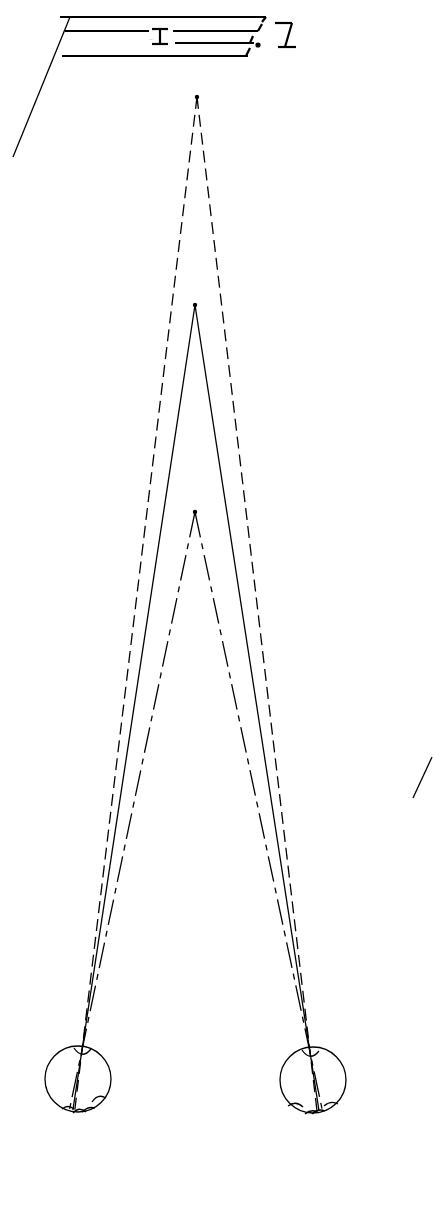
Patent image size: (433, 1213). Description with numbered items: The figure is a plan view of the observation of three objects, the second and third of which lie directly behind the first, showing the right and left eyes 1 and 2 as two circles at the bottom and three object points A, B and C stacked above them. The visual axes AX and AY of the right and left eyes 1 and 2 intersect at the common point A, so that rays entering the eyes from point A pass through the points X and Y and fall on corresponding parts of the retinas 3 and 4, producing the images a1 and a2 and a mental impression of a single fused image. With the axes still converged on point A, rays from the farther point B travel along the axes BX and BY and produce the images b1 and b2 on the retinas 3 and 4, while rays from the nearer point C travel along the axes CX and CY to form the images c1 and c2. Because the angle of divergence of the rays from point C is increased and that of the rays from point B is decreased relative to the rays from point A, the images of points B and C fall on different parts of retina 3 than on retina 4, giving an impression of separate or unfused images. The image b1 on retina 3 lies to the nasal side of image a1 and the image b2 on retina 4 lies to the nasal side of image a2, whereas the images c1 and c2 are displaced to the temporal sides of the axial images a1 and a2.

The right eye 1 is at (337, 1070).
The left eye 2 is at (100, 1067).
The retina 3 is at (290, 1105).
The retina 4 is at (104, 1098).
The point A is at (204, 306).
The point B is at (206, 98).
The point C is at (204, 513).
The nodal point of right eye X is at (313, 1043).
The nodal point of left eye Y is at (79, 1041).
The image of point A on right retina a1 is at (319, 1115).
The image of point B on right retina b1 is at (311, 1114).
The image of point C on right retina c1 is at (336, 1104).
The image of point A on left retina a2 is at (76, 1112).
The image of point B on left retina b2 is at (86, 1112).
The image of point C on left retina c2 is at (63, 1108).